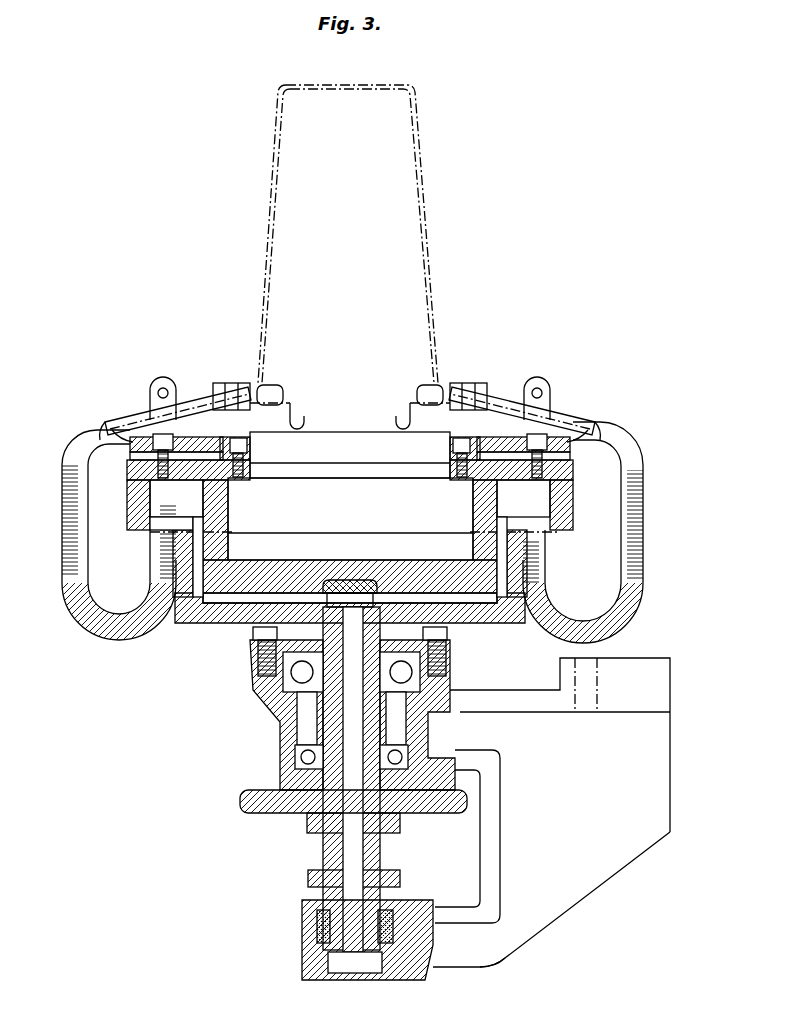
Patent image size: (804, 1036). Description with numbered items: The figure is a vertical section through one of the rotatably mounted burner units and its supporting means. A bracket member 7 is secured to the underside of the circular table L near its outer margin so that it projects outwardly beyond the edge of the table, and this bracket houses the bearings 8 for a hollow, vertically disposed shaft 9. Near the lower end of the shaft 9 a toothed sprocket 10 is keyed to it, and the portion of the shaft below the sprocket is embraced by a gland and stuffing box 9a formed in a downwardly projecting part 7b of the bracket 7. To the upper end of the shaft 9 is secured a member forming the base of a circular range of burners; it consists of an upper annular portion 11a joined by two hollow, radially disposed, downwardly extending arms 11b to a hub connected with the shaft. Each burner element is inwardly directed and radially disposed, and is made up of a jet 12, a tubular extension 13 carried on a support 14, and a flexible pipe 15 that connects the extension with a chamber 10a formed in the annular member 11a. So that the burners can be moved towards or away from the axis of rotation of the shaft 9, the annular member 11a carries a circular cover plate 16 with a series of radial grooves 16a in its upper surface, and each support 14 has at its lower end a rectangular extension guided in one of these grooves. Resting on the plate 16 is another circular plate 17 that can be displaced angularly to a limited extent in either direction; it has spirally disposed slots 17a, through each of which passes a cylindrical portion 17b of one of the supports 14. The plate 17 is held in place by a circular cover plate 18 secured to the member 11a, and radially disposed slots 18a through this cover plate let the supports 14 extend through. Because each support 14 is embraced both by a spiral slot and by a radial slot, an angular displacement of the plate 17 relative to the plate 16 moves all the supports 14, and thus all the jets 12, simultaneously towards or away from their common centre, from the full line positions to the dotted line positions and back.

The bracket member 7 is at (612, 858).
The downwardly projecting part of the bracket 7b is at (492, 963).
The bearings 8 is at (293, 676).
The hollow shaft 9 is at (345, 792).
The gland and stuffing box 9a is at (318, 912).
The toothed sprocket 10 is at (250, 800).
The chamber 10a is at (535, 508).
The upper annular portion 11a is at (150, 516).
The hollow radially disposed arms 11b is at (180, 626).
The jet 12 is at (231, 388).
The tubular extension 13 is at (138, 432).
The jet support 14 is at (163, 378).
The flexible pipe 15 is at (112, 548).
The circular cover plate 16 is at (132, 478).
The radial grooves 16a is at (133, 455).
The circular plate 17 is at (133, 437).
The spirally disposed slots 17a is at (560, 433).
The cylindrical portion of the support 17b is at (165, 440).
The circular cover plate 18 is at (165, 505).
The radially disposed slots 18a is at (135, 432).
The circular table L is at (640, 678).